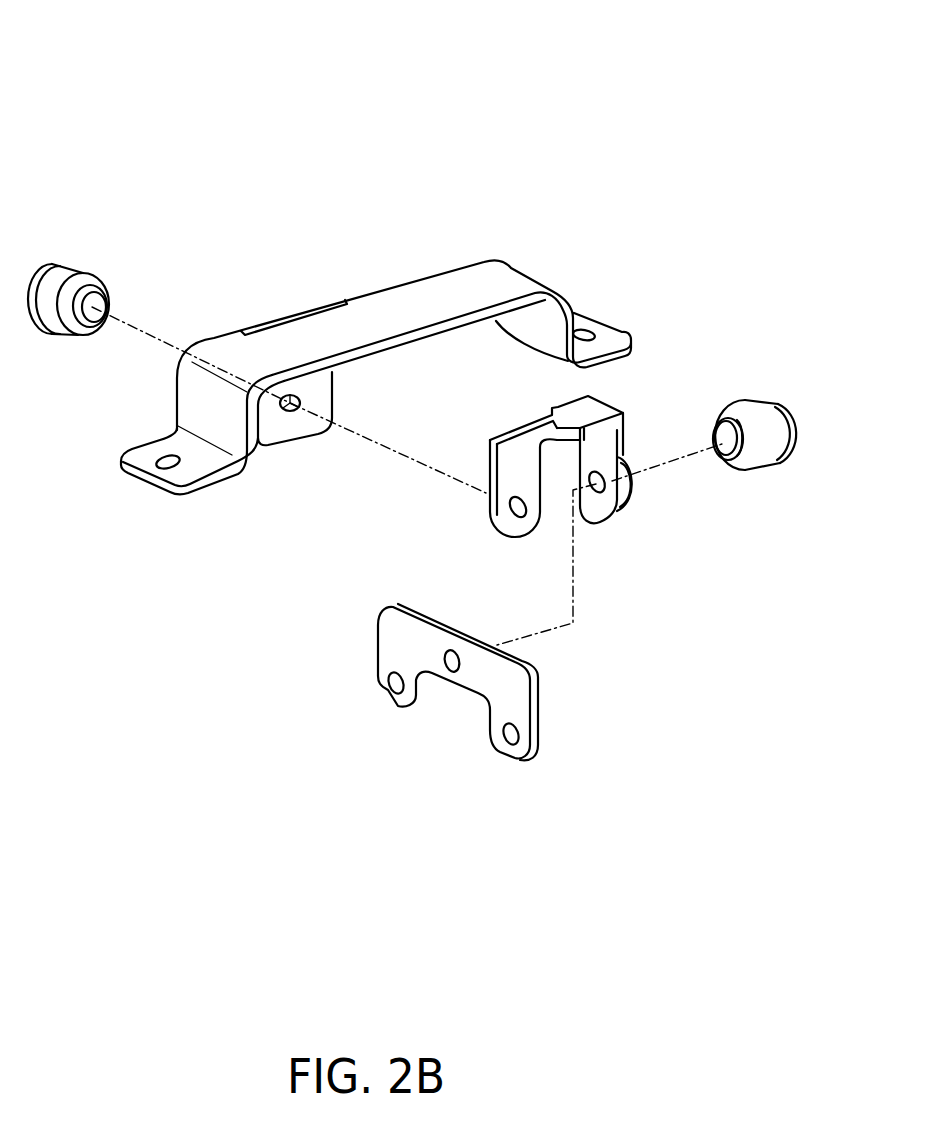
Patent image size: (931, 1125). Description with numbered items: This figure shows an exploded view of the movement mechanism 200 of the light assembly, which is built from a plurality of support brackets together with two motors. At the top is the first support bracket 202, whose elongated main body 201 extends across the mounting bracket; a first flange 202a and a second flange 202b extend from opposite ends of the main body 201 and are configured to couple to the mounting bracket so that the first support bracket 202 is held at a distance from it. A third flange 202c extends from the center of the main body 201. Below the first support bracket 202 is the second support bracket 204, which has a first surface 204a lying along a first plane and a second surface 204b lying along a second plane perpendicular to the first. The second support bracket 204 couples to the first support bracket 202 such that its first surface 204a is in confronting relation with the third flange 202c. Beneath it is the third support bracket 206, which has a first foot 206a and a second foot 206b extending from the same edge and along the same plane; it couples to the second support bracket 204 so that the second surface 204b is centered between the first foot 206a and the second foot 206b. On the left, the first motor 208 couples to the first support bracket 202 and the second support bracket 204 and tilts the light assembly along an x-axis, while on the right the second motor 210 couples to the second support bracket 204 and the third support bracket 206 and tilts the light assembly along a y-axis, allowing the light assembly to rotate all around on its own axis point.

The movement mechanism 200 is at (223, 138).
The main body 201 is at (380, 310).
The first support bracket 202 is at (507, 232).
The first flange 202a is at (213, 463).
The second flange 202b is at (607, 336).
The third flange 202c is at (302, 418).
The second support bracket 204 is at (632, 414).
The first surface 204a is at (510, 473).
The second surface 204b is at (610, 490).
The third support bracket 206 is at (452, 750).
The first foot 206a is at (392, 690).
The second foot 206b is at (510, 742).
The first motor 208 is at (68, 275).
The second motor 210 is at (759, 401).